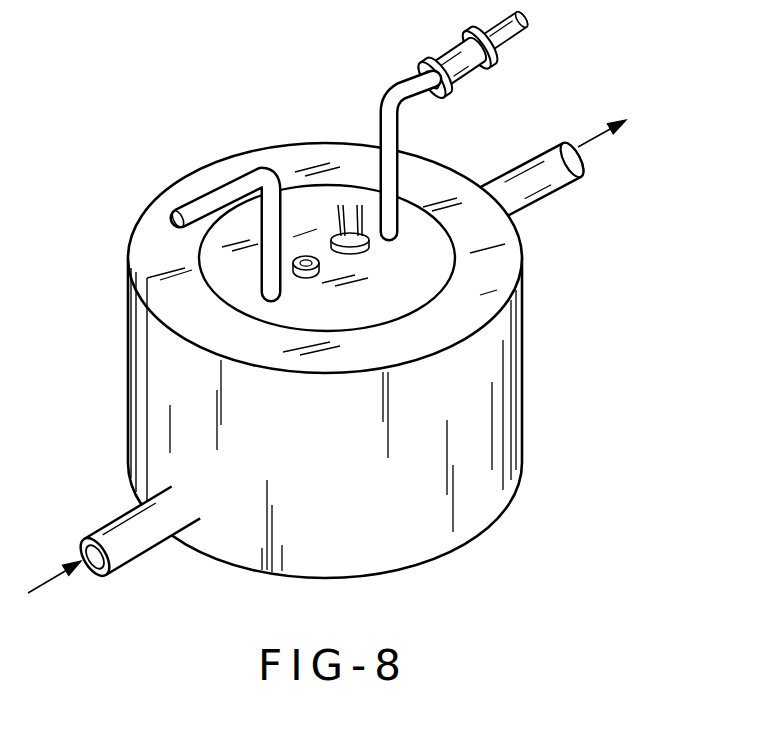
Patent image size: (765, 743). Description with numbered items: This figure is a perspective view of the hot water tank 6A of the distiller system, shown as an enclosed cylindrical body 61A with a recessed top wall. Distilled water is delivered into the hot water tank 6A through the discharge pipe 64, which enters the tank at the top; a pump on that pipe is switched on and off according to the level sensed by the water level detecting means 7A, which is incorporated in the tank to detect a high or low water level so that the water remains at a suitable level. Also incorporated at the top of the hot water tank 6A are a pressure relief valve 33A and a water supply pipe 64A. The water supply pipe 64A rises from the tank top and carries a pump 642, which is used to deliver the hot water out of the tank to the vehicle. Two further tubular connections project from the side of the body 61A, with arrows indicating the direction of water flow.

The housing body 61A is at (490, 367).
The hot water tank 6A is at (478, 273).
The pressure relief valve 33A is at (302, 256).
The water level detecting means 7A is at (370, 242).
The discharge pipe 64 is at (204, 190).
The water supply pipe 64A is at (391, 98).
The pump 642 is at (478, 80).